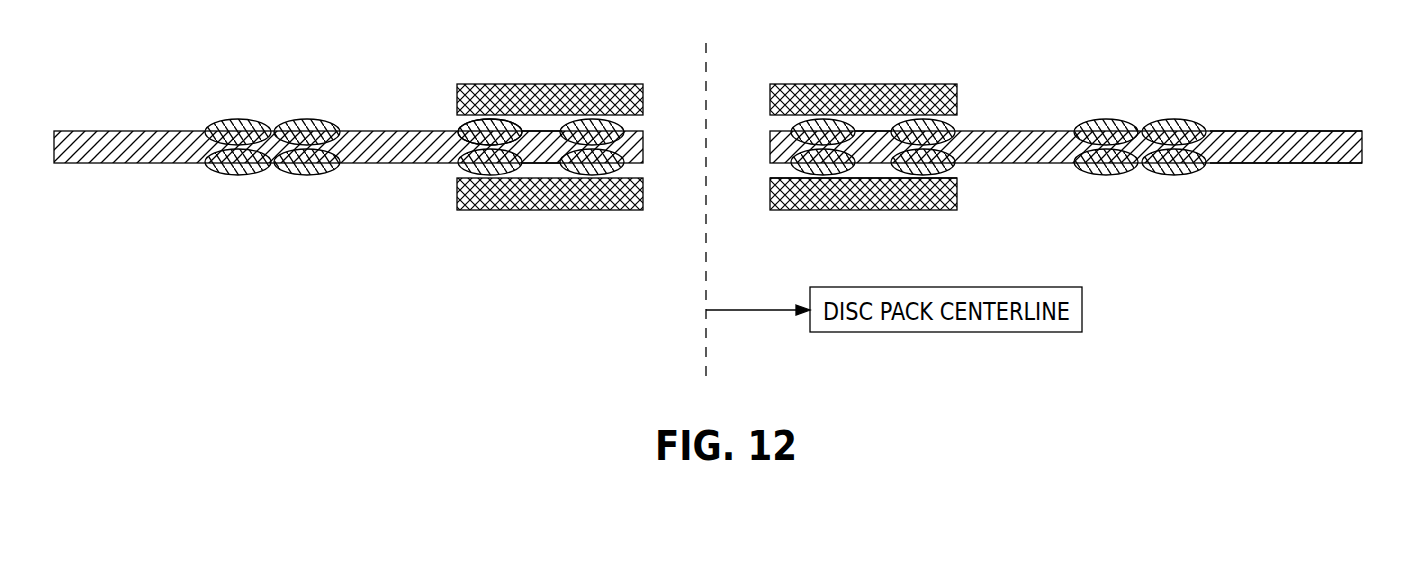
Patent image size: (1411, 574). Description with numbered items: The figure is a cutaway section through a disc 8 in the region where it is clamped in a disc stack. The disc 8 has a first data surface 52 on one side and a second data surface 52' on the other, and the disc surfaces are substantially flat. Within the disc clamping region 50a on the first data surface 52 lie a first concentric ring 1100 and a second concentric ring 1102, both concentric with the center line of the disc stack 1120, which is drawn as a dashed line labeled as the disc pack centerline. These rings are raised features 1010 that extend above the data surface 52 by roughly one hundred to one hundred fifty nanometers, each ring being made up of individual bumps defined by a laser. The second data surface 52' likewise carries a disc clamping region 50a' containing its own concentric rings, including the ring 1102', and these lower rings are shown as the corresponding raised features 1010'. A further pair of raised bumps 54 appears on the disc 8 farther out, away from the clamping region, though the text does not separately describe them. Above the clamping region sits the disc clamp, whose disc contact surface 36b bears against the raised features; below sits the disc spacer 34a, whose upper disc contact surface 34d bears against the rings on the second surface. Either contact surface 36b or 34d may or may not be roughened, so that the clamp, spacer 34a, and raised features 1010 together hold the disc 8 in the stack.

The disc 8 is at (1365, 143).
The first data surface 52 is at (1286, 109).
The second data surface 52' is at (1286, 186).
The protrusions 54 is at (1175, 118).
The disc clamping region 50a is at (707, 82).
The disc clamping region 50a' is at (541, 207).
The raised features 1010 is at (482, 90).
The opposite first bond protrusion 1010' is at (477, 206).
The first concentric ring 1100 is at (475, 122).
The second concentric ring 1102 is at (596, 91).
The concentric ring 1102' is at (594, 203).
The disc contact surface 36b is at (950, 118).
The disc spacer 34a is at (937, 200).
The upper disc contact surface 34d is at (958, 175).
The center line of the disc stack 1120 is at (704, 330).